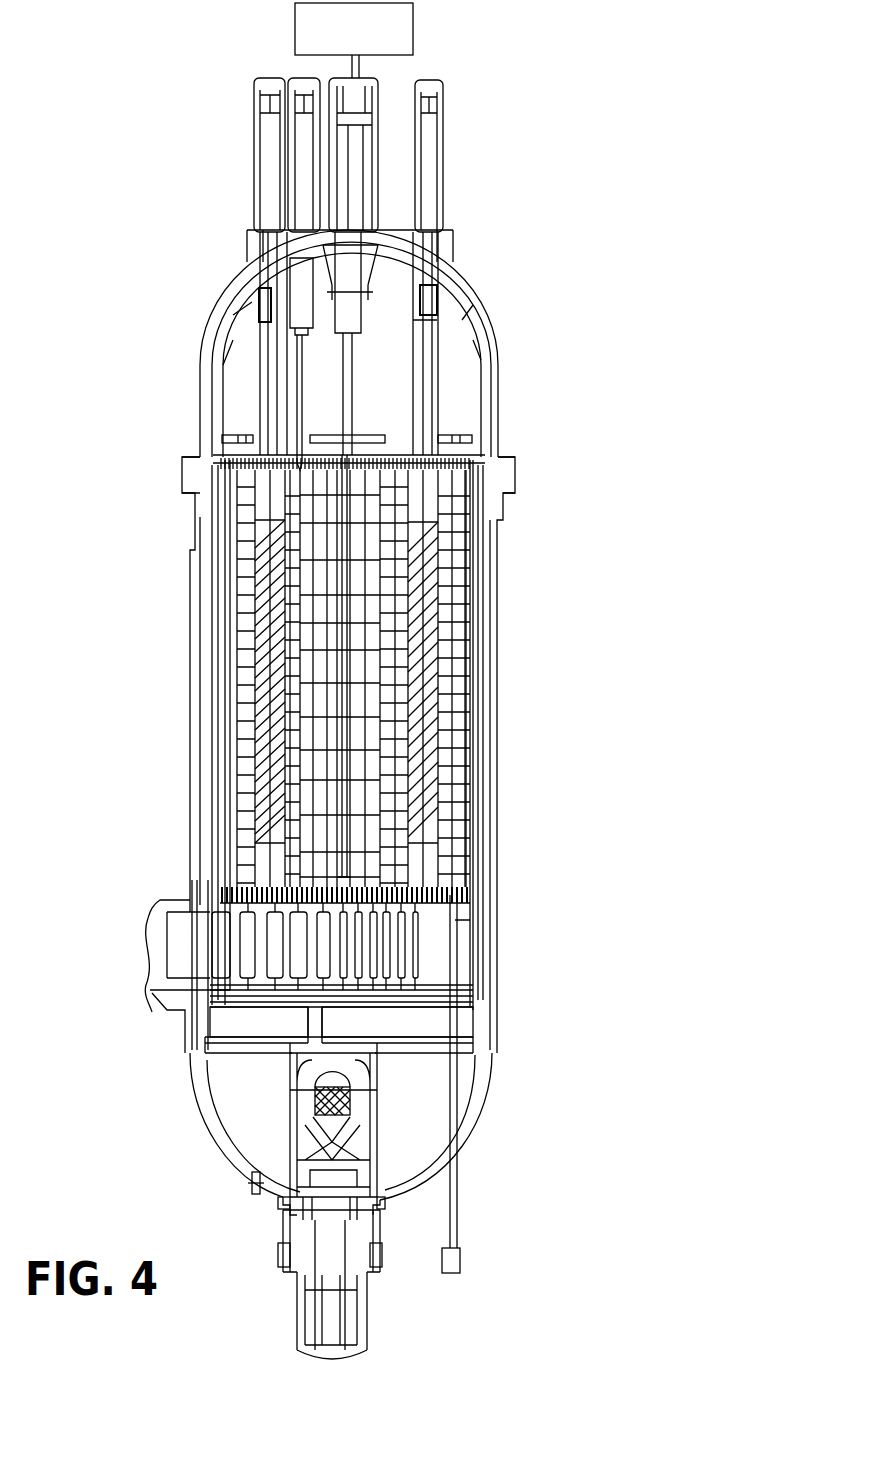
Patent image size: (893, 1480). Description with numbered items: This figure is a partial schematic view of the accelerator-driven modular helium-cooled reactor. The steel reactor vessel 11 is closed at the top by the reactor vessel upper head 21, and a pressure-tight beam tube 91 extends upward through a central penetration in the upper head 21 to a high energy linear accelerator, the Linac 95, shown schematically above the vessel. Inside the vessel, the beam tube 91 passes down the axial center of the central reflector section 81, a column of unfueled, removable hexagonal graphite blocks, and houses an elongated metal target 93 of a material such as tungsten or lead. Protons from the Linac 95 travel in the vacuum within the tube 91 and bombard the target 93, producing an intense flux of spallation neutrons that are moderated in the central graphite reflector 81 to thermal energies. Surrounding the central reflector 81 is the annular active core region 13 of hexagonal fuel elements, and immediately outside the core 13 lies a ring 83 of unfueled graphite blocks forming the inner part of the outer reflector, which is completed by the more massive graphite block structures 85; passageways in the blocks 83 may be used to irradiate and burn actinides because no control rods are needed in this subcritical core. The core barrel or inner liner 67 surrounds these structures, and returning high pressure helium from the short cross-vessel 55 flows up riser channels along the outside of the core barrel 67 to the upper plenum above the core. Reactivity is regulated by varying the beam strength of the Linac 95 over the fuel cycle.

The linear accelerator (Linac) 95 is at (413, 27).
The beam tube 91 is at (377, 197).
The reactor vessel upper head 21 is at (497, 406).
The reactor vessel 11 is at (192, 660).
The cross-vessel 55 is at (180, 903).
The core barrel or inner liner 67 is at (207, 810).
The outer reflector graphite block structures 85 is at (480, 558).
The ring of unfueled graphite blocks 83 is at (470, 708).
The annular active core region 13 is at (433, 680).
The target 93 is at (335, 647).
The central reflector section 81 is at (392, 843).